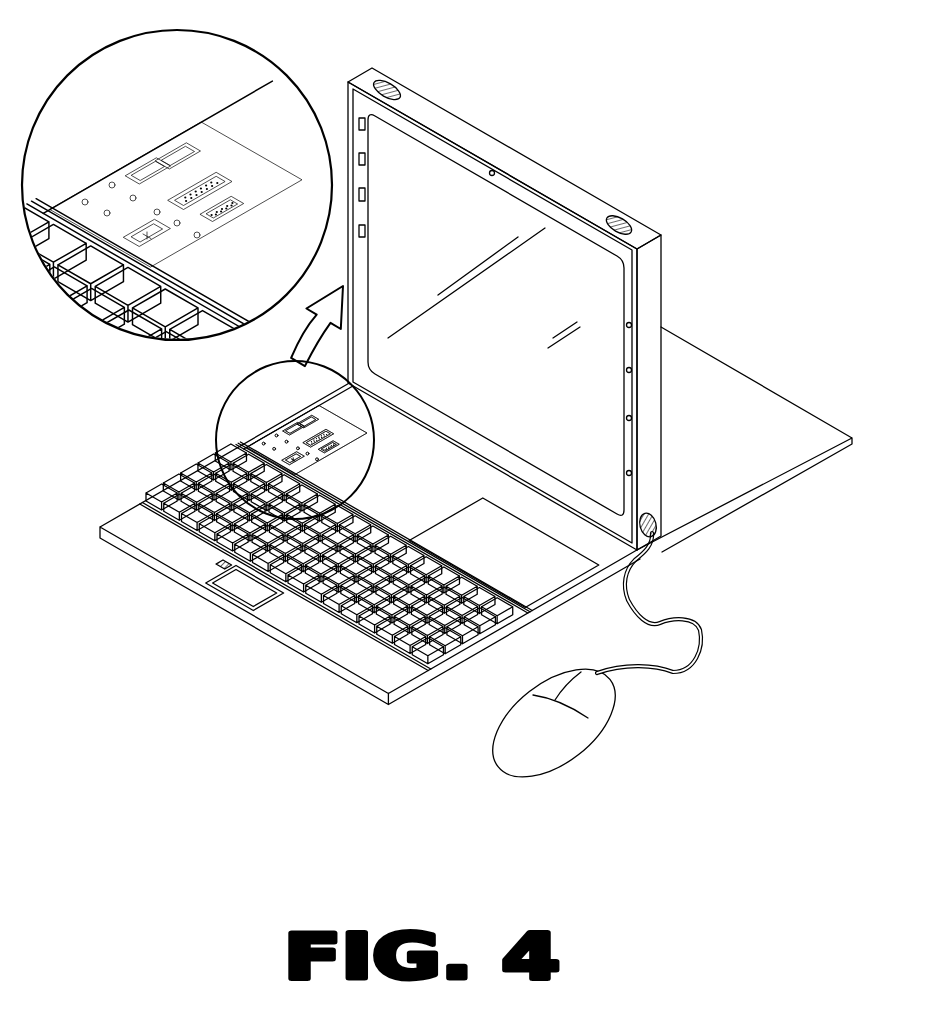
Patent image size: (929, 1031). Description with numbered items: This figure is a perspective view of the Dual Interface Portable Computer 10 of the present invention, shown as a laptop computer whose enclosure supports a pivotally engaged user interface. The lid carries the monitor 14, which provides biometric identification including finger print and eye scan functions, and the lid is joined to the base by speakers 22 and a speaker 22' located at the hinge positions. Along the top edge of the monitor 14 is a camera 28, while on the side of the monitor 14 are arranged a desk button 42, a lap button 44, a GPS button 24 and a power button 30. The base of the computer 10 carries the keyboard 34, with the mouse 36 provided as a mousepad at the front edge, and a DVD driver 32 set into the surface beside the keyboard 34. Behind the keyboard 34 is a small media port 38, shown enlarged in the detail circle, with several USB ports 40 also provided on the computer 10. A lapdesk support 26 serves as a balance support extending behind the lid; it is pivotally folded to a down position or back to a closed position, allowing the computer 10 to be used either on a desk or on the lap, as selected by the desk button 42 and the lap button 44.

The Dual Interface Portable Computer 10 is at (750, 108).
The monitor 14 is at (548, 236).
The speaker 22 is at (576, 355).
The speaker 22' is at (301, 46).
The GPS button 24 is at (631, 418).
The lapdesk support 26 is at (785, 421).
The camera 28 is at (493, 171).
The power button 30 is at (631, 473).
The DVD driver 32 is at (528, 583).
The keyboard 34 is at (322, 660).
The mouse 36 is at (247, 585).
The small media port 38 is at (272, 432).
The USB port 40 is at (365, 231).
The desk button 42 is at (631, 325).
The lap button 44 is at (631, 370).